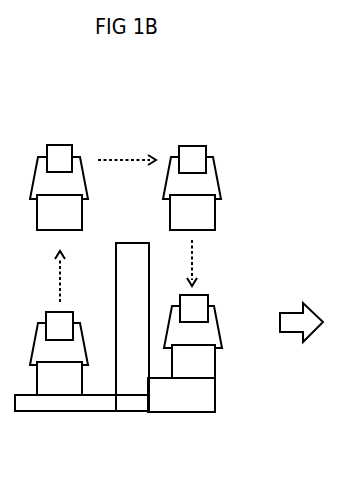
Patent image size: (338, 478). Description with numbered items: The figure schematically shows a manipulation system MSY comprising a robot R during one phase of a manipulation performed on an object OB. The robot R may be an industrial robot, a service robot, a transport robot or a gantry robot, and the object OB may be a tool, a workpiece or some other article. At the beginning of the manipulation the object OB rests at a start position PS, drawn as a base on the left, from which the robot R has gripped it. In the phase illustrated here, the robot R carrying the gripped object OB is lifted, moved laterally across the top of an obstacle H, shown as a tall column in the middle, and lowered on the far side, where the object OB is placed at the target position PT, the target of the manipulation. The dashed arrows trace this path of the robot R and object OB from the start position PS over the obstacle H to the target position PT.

The manipulation system MSY is at (170, 274).
The robot R is at (127, 242).
The object OB is at (126, 295).
The obstacle H is at (132, 327).
The target position PT is at (181, 395).
The start position PS is at (73, 398).